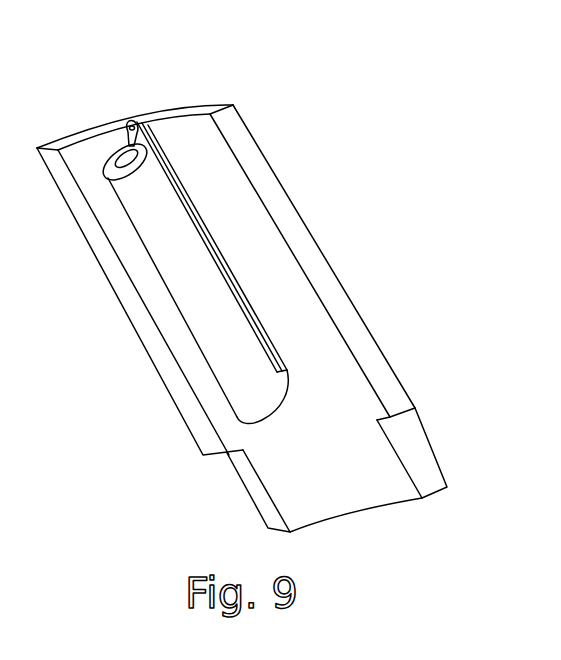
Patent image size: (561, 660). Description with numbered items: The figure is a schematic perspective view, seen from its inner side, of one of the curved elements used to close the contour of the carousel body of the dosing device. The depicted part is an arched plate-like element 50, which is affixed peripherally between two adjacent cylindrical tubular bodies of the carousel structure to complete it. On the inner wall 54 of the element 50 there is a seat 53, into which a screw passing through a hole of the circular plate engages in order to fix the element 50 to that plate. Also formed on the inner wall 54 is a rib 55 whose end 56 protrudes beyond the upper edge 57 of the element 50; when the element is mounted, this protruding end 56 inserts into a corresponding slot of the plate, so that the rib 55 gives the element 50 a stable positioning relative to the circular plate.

The arched plate-like element 50 is at (373, 342).
The seat 53 is at (197, 308).
The inner wall 54 is at (295, 292).
The rib 55 is at (203, 233).
The end 56 is at (130, 118).
The upper edge 57 is at (202, 110).